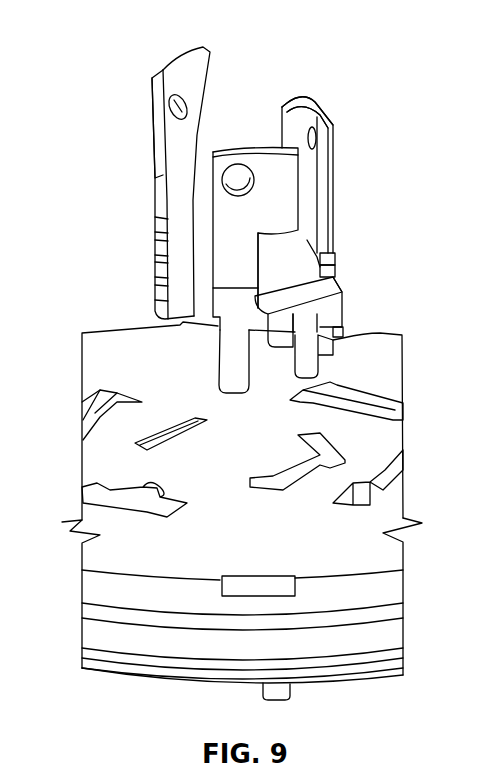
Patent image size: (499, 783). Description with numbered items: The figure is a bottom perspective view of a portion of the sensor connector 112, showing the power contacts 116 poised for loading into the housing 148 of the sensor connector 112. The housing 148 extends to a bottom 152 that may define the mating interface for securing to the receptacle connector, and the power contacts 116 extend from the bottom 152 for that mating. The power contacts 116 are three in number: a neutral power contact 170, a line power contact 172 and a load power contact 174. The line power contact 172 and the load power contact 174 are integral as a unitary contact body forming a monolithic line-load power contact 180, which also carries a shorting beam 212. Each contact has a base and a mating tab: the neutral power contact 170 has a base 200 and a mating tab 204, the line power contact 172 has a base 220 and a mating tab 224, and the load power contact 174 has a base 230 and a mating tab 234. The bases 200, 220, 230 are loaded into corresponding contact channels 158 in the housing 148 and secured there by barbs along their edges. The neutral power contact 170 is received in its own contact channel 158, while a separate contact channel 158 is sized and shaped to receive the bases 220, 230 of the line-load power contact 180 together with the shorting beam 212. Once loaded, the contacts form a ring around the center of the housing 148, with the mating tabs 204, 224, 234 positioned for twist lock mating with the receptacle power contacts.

The sensor connector 112 is at (366, 213).
The power contacts 116 is at (366, 133).
The housing 148 is at (120, 543).
The bottom 152 is at (150, 555).
The contact channels 158 is at (333, 450).
The neutral power contact 170 is at (168, 70).
The line power contact 172 is at (245, 150).
The load power contact 174 is at (322, 98).
The line-load power contact 180 is at (352, 268).
The base 200 is at (160, 280).
The mating tab 204 is at (148, 137).
The shorting beam 212 is at (320, 308).
The base 220 is at (233, 377).
The mating tab 224 is at (278, 197).
The base 230 is at (343, 335).
The mating tab 234 is at (287, 100).